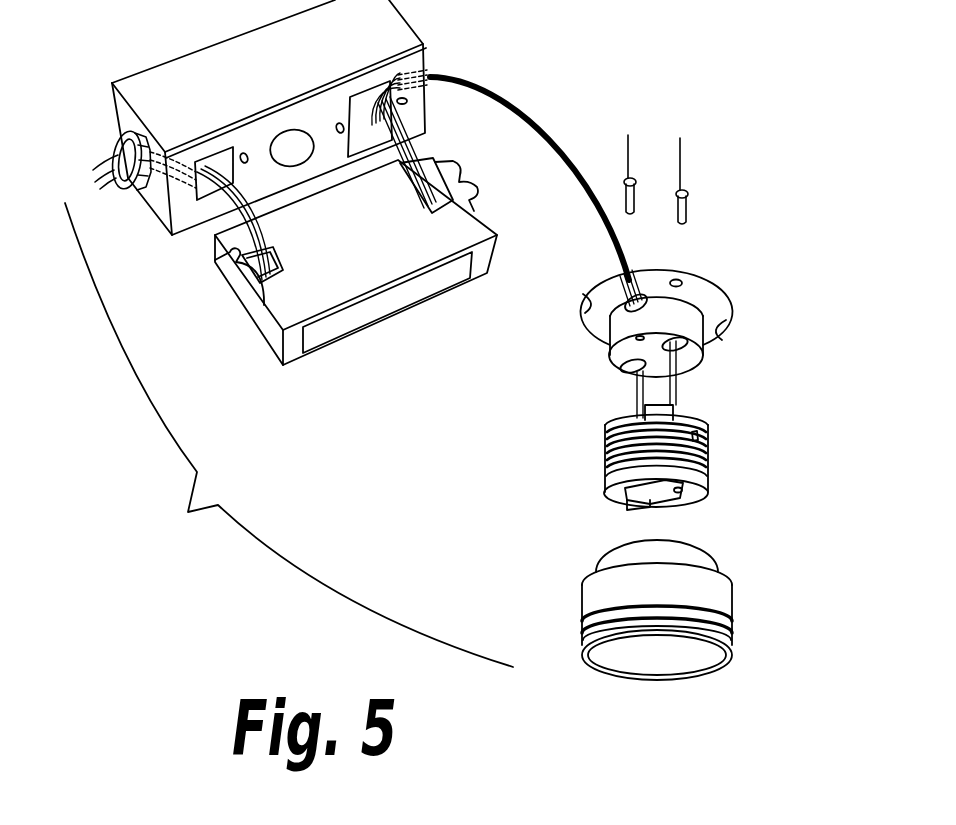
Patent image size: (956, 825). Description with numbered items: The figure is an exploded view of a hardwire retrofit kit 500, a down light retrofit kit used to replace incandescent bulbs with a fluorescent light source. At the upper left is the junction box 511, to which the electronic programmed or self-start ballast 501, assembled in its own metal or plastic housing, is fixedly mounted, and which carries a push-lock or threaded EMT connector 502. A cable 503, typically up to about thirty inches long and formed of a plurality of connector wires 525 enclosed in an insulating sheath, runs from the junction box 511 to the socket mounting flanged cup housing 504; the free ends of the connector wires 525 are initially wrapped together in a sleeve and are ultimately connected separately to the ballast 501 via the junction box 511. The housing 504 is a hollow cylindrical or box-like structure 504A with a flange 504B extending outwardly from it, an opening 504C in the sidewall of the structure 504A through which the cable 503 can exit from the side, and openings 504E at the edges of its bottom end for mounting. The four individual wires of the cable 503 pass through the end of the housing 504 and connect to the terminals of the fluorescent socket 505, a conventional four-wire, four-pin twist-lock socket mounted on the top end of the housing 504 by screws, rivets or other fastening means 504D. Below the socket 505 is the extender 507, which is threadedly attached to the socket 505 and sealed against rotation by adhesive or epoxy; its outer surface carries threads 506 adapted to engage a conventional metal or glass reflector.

The hardwire retrofit kit 500 is at (289, 435).
The electronic ballast 501 is at (417, 293).
The EMT connector 502 is at (118, 142).
The cable 503 is at (535, 112).
The socket mounting flanged cup housing 504 is at (592, 357).
The cylindrical or box-like structure 504A is at (685, 319).
The flange 504B is at (703, 296).
The opening 504C is at (618, 298).
The fastening means 504D is at (690, 197).
The openings 504E is at (583, 308).
The fluorescent socket 505 is at (690, 455).
The threads 506 is at (728, 652).
The extender 507 is at (713, 588).
The junction box 511 is at (430, 43).
The connector wires 525 is at (620, 278).